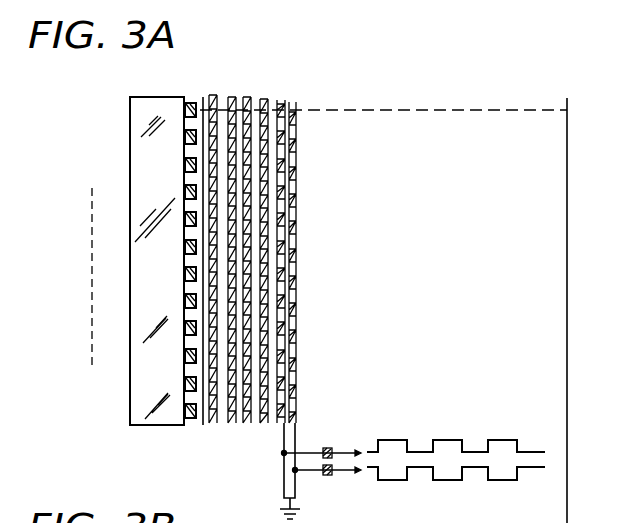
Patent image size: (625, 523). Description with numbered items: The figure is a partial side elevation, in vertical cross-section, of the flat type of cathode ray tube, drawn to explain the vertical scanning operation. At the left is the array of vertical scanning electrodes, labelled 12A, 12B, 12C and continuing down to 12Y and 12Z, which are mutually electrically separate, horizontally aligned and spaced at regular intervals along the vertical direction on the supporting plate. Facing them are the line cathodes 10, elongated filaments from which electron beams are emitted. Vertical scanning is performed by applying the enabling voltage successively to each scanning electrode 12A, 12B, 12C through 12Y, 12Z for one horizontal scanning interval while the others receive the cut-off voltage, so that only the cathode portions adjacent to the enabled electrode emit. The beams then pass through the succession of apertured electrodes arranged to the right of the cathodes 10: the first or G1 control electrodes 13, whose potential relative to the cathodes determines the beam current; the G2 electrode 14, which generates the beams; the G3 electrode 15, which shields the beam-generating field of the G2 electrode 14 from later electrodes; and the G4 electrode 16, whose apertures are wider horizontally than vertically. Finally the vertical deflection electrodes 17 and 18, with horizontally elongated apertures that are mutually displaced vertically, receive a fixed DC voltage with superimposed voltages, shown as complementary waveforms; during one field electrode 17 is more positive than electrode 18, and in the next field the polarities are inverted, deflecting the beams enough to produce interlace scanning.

The line cathode 10 is at (203, 97).
The vertical scanning electrode 12A is at (185, 110).
The vertical scanning electrode 12B is at (185, 138).
The vertical scanning electrode 12C is at (185, 166).
The vertical scanning electrode 12Y is at (185, 386).
The vertical scanning electrode 12Z is at (185, 412).
The first electrode (G1 electrode) 13 is at (213, 95).
The second electrode (G2 electrode) 14 is at (232, 97).
The third electrode (G3 electrode) 15 is at (246, 97).
The fourth electrode (G4 electrode) 16 is at (264, 99).
The vertical deflection electrode 17 is at (282, 100).
The vertical deflection electrode 18 is at (294, 102).